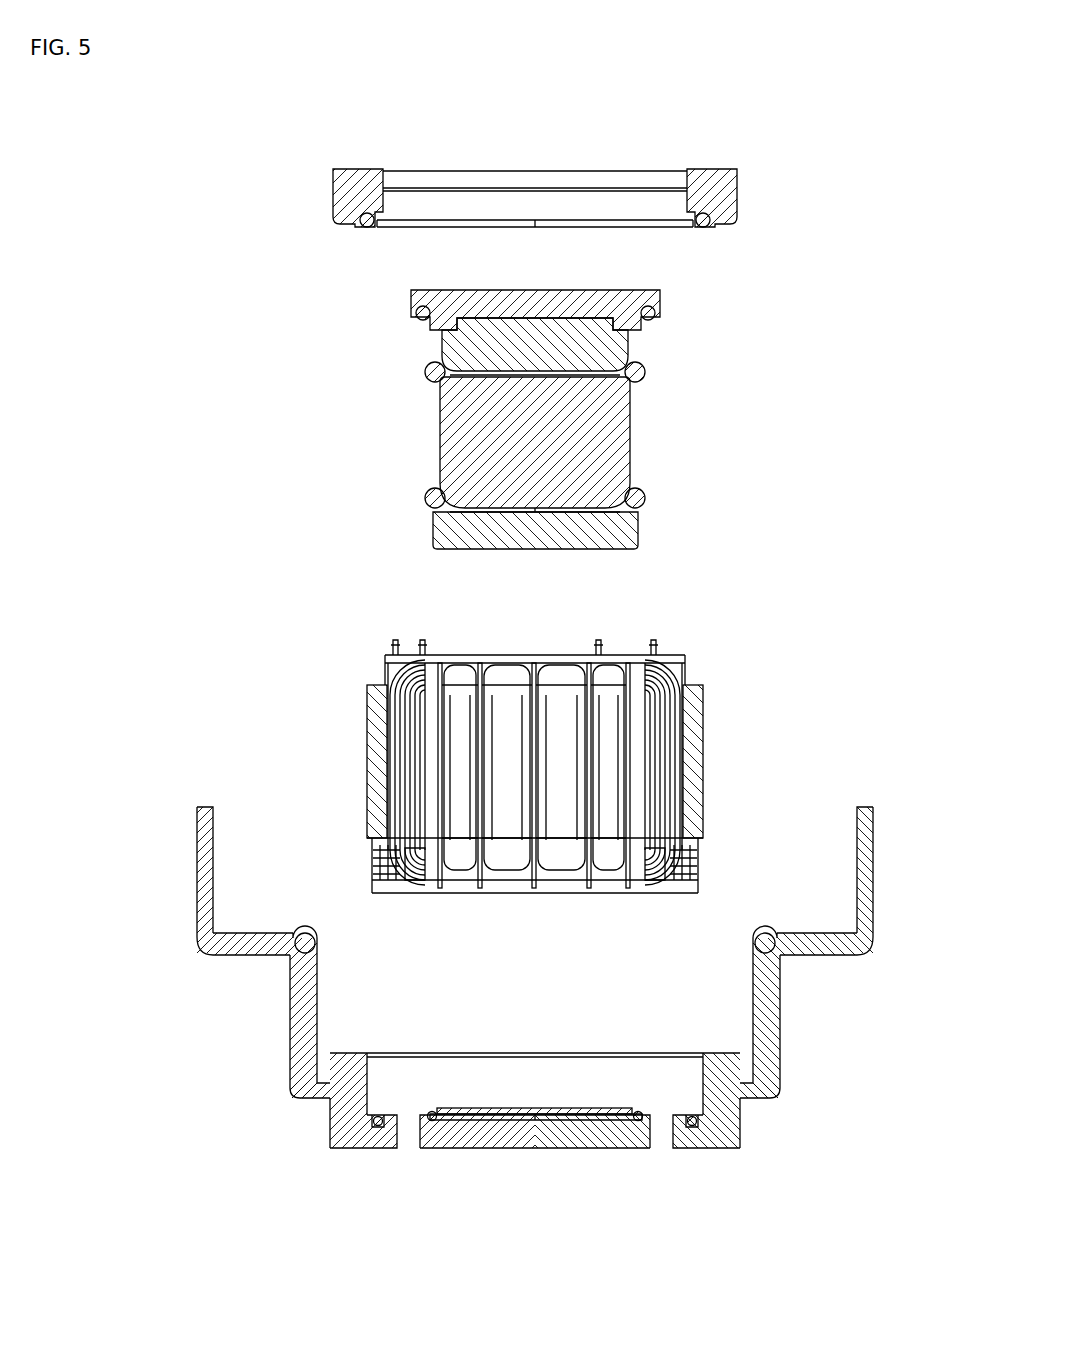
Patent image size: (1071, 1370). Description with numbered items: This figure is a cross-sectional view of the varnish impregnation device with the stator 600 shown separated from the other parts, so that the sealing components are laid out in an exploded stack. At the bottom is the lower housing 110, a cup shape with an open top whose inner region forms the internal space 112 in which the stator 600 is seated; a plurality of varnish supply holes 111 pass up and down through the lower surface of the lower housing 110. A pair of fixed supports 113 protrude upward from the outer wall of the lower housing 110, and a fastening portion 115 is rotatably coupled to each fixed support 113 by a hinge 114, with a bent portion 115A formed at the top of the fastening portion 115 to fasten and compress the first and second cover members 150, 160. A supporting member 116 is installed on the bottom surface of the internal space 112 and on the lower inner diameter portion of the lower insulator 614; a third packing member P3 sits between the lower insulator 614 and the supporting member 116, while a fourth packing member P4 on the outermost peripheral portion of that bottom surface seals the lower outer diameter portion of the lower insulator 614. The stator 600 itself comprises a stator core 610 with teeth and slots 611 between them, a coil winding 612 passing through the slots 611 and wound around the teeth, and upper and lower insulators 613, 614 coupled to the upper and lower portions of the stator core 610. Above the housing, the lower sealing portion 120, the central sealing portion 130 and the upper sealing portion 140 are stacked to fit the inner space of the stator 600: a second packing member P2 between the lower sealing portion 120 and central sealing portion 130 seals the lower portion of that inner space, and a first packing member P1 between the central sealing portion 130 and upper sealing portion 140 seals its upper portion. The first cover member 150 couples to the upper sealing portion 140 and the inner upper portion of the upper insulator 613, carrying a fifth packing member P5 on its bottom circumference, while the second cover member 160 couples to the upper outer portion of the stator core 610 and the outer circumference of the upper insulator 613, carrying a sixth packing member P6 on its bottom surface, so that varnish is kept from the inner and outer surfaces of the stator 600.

The second cover member 160 is at (342, 198).
The first cover member 150 is at (413, 298).
The upper sealing portion 140 is at (445, 340).
The central sealing portion 130 is at (448, 460).
The lower sealing portion 120 is at (442, 533).
The first packing member P1 is at (643, 377).
The second packing member P2 is at (640, 493).
The third packing member P3 is at (433, 1122).
The fourth packing member P4 is at (378, 1130).
The fifth packing member P5 is at (655, 317).
The sixth packing member P6 is at (700, 230).
The stator 600 is at (716, 729).
The stator core 610 is at (692, 798).
The slot 611 is at (395, 720).
The coil winding 612 is at (388, 760).
The upper insulator 613 is at (687, 660).
The lower insulator 614 is at (693, 867).
The lower housing 110 is at (778, 1115).
The varnish supply hole 111 is at (409, 1130).
The internal space 112 is at (573, 1078).
The fixed support 113 is at (292, 1045).
The hinge 114 is at (295, 944).
The fastening portion 115 is at (217, 945).
The bent portion 115A is at (197, 842).
The supporting member 116 is at (575, 1128).